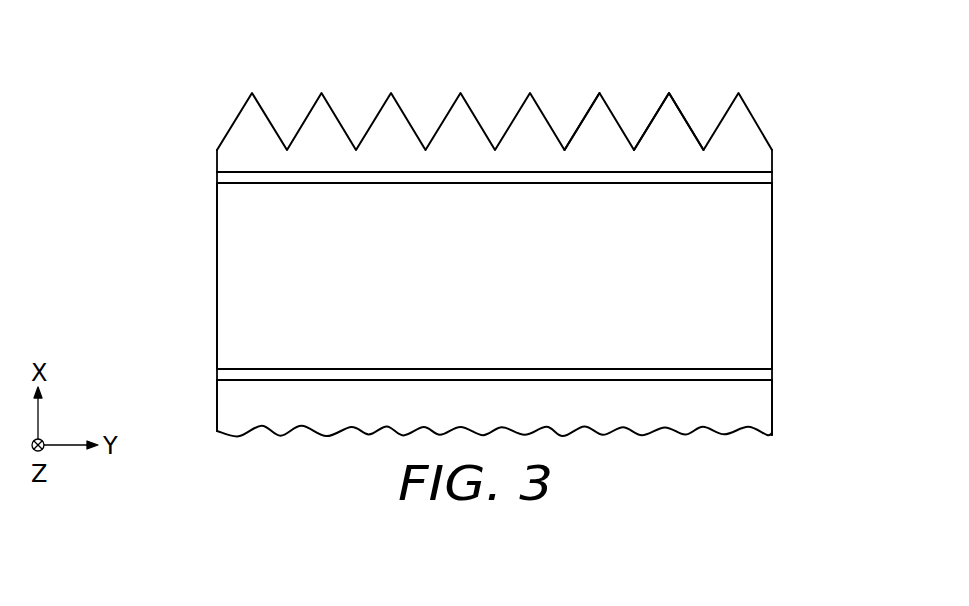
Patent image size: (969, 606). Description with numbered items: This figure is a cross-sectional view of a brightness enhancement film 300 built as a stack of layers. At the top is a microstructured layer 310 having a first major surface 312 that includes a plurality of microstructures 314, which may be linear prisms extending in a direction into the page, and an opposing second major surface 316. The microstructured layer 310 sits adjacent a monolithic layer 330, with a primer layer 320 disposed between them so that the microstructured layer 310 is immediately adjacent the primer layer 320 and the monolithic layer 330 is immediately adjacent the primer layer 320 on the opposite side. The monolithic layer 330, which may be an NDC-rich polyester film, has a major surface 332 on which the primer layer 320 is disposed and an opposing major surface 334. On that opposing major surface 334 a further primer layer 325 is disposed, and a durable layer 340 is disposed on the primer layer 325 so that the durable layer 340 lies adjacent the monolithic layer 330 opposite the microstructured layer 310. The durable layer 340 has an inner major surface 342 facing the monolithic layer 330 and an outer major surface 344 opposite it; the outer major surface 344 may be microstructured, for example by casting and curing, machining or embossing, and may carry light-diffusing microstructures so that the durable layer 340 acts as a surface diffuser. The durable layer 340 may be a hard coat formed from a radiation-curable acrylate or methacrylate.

The brightness enhancement film 300 is at (229, 44).
The microstructured layer 310 is at (757, 156).
The first major surface 312 is at (677, 107).
The microstructures 314 is at (585, 110).
The second major surface 316 is at (733, 170).
The primer layer 320 is at (218, 177).
The primer layer 325 is at (758, 373).
The monolithic layer 330 is at (243, 280).
The major surface 332 is at (248, 184).
The opposing major surface 334 is at (260, 370).
The durable layer 340 is at (758, 408).
The inner major surface 342 is at (709, 382).
The outer major surface 344 is at (290, 431).